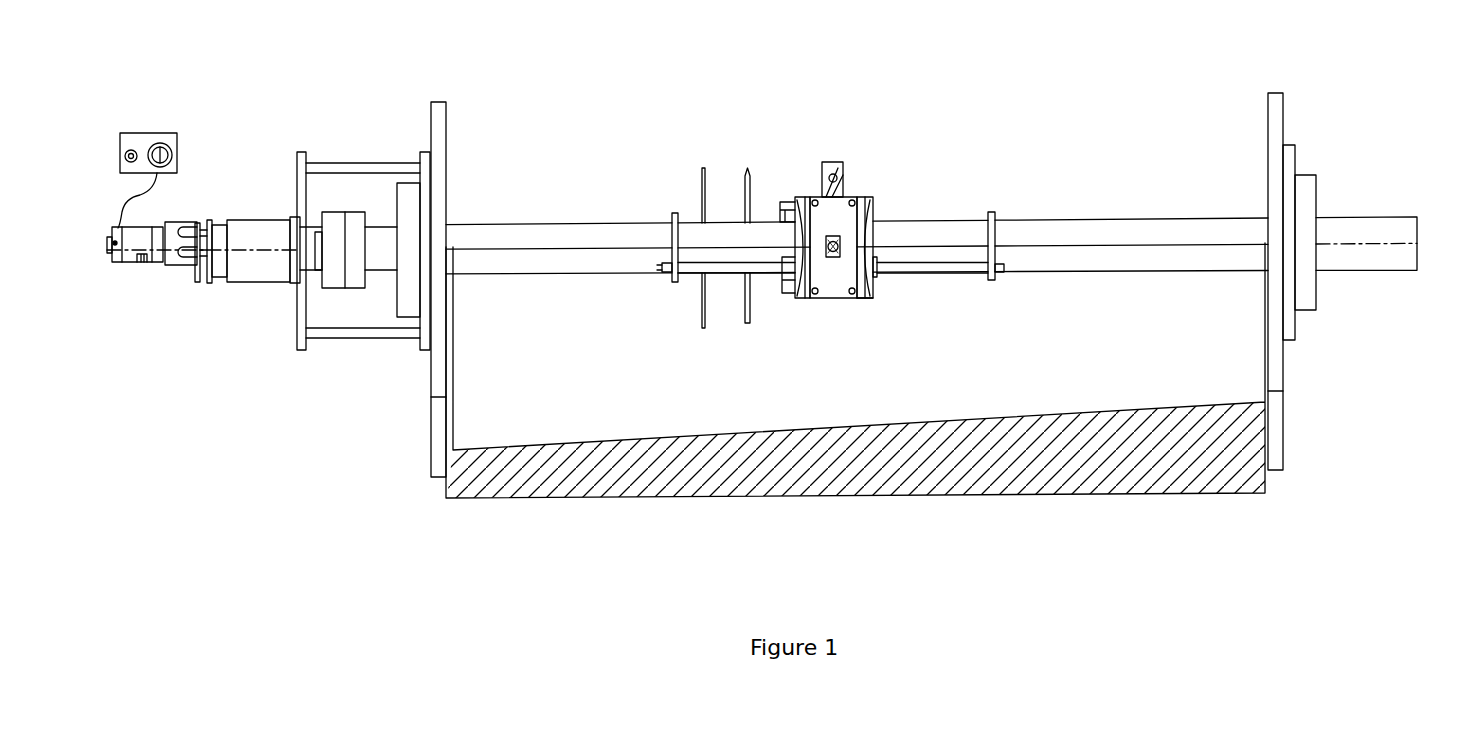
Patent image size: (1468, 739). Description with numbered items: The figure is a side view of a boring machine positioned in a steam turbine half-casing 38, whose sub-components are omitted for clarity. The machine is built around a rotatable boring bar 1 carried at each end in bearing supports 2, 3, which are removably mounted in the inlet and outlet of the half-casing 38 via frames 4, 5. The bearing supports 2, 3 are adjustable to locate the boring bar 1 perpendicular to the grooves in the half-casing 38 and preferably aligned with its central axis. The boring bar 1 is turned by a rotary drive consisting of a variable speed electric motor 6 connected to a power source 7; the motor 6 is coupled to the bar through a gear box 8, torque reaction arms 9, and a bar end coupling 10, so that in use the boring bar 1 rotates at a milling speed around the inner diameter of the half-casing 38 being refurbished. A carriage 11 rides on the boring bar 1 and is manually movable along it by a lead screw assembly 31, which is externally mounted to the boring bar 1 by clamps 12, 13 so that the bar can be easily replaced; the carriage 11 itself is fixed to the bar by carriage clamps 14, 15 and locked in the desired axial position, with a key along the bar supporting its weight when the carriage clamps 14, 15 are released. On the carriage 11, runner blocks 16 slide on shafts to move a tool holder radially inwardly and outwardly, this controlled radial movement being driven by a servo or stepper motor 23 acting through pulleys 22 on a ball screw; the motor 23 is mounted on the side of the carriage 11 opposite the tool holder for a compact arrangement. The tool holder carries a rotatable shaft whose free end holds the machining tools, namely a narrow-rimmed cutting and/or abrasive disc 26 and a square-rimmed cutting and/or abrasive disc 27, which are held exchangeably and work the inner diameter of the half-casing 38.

The boring bar 1 is at (1381, 212).
The bearing support 2 is at (1335, 220).
The bearing support 3 is at (1318, 212).
The frame 4 is at (1301, 252).
The frame 5 is at (459, 246).
The variable speed electric motor 6 is at (152, 269).
The power source 7 is at (175, 157).
The gear box 8 is at (247, 298).
The torque reaction arms 9 is at (358, 209).
The bar end coupling 10 is at (424, 178).
The carriage 11 is at (909, 197).
The clamp 12 is at (1039, 188).
The clamp 13 is at (627, 191).
The carriage clamp 14 is at (909, 328).
The carriage clamp 15 is at (759, 298).
The runner blocks 16 is at (836, 298).
The pulleys 22 is at (828, 183).
The servo or stepper motor 23 is at (844, 152).
The narrow-rimmed cutting and/or abrasive disc 26 is at (701, 272).
The square-rimmed cutting and/or abrasive disc 27 is at (639, 272).
The lead screw assembly 31 is at (860, 319).
The steam turbine half-casing 38 is at (842, 368).